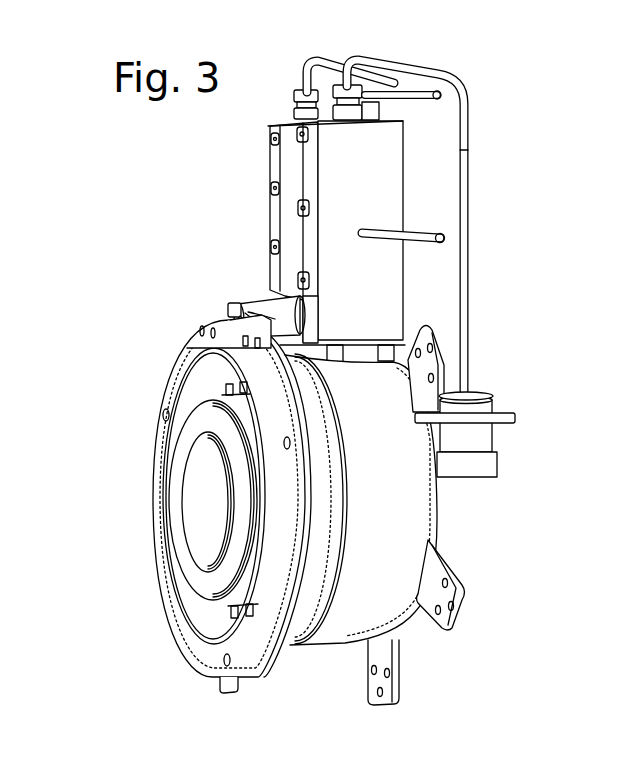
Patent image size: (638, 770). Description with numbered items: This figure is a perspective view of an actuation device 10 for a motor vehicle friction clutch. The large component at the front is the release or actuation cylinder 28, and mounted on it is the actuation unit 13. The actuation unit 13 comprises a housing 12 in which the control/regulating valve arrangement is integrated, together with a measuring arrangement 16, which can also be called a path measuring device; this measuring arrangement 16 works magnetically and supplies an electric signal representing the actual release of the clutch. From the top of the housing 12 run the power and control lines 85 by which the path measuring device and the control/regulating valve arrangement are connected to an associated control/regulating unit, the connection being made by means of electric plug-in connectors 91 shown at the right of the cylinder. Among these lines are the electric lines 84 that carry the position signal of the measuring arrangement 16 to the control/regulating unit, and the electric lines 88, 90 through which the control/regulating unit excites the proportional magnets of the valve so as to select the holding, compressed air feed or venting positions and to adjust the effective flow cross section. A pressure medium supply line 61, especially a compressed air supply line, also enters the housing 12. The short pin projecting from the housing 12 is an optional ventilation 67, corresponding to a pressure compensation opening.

The clutch actuator assembly 10 is at (88, 7).
The housing 12 is at (278, 228).
The actuation unit 13 is at (292, 224).
The measuring arrangement 16 is at (228, 306).
The release or actuation cylinder 28 is at (126, 445).
The pressure medium supply line 61 is at (420, 98).
The ventilation 67 is at (446, 243).
The electric lines 84 is at (320, 53).
The power and control lines 85 is at (303, 81).
The electric line 88 is at (465, 226).
The electric line 90 is at (467, 110).
The electric plug-in connectors 91 is at (472, 480).